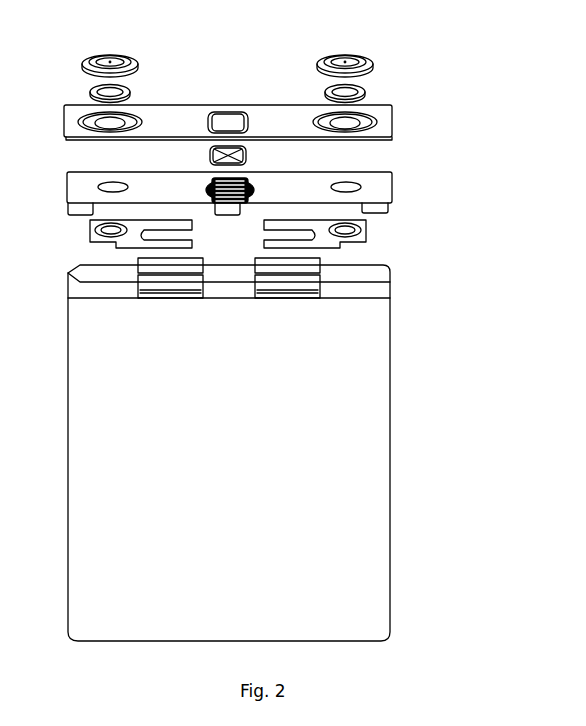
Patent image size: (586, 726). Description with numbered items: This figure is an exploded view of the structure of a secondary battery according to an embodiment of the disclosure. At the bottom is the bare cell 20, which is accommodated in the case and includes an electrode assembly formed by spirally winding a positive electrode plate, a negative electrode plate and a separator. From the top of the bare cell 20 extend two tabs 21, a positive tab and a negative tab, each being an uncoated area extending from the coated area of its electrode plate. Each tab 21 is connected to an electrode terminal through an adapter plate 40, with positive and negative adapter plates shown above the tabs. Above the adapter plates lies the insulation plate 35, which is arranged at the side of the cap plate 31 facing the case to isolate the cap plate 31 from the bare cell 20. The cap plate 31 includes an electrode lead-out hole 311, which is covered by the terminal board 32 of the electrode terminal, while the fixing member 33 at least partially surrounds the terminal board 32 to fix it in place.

The bare cell 20 is at (268, 449).
The tab 21 is at (310, 282).
The cap plate 31 is at (272, 125).
The electrode lead-out hole 311 is at (377, 112).
The terminal board 32 is at (318, 66).
The fixing member 33 is at (350, 78).
The insulation plate 35 is at (392, 185).
The adapter plate 40 is at (368, 228).